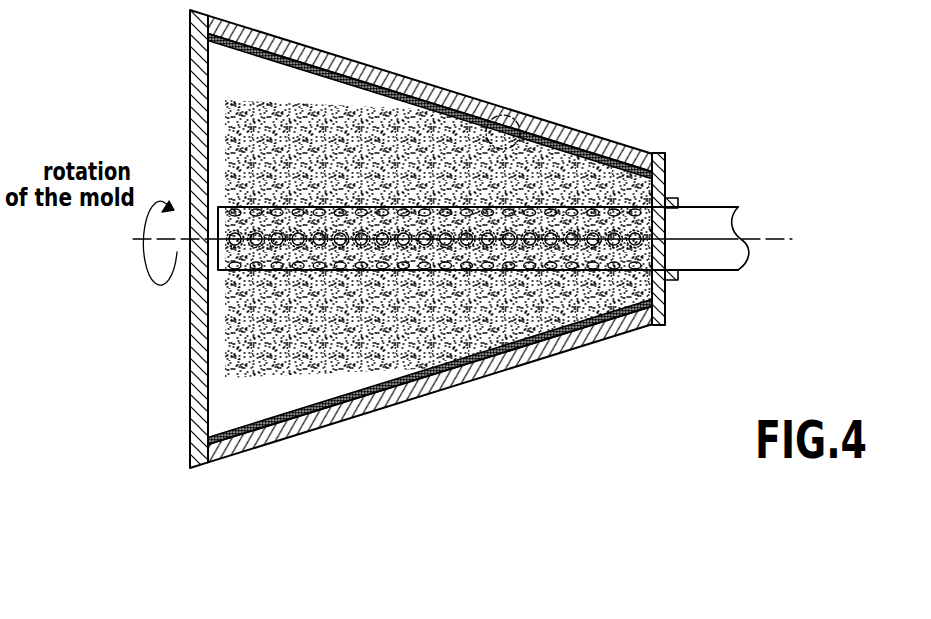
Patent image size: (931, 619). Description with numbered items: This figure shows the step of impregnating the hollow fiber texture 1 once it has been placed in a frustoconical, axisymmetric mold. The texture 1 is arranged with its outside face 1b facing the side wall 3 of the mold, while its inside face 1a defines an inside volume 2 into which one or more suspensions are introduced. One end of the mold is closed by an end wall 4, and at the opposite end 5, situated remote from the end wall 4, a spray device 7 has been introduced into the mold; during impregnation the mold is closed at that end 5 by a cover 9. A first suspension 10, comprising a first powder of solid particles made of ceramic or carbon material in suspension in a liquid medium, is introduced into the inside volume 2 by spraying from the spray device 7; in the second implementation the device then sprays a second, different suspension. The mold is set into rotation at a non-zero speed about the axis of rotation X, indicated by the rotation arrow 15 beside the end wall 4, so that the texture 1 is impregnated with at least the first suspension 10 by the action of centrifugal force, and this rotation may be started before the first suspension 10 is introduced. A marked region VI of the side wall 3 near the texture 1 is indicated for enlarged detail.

The fiber texture 1 is at (430, 236).
The inside face 1a is at (273, 67).
The outside face 1b is at (303, 63).
The inside volume 2 is at (247, 413).
The side wall 3 is at (610, 148).
The end wall 4 is at (205, 182).
The end of the mold 5 is at (641, 183).
The spray device 7 is at (707, 255).
The cover 9 is at (665, 180).
The first suspension 10 is at (260, 135).
The rotation arrow 15 is at (205, 291).
The detail VI is at (513, 115).
The axis of rotation X is at (773, 238).